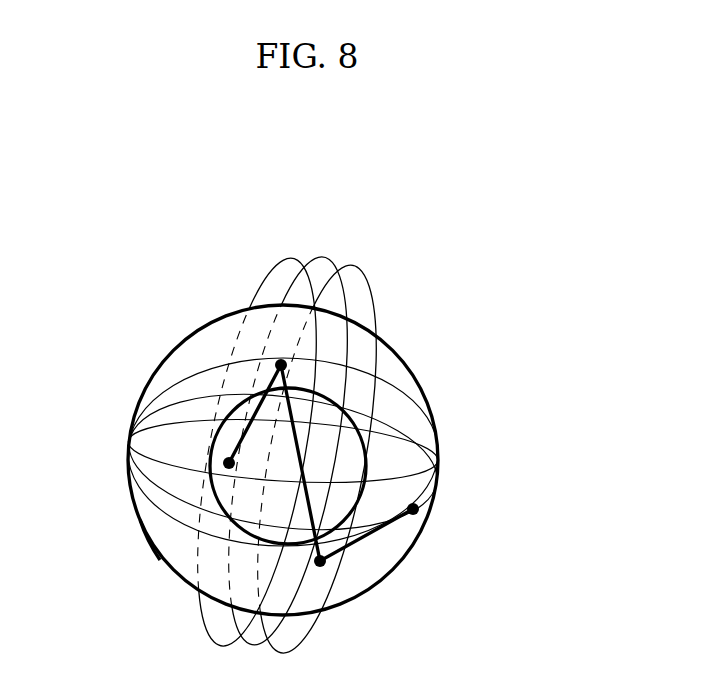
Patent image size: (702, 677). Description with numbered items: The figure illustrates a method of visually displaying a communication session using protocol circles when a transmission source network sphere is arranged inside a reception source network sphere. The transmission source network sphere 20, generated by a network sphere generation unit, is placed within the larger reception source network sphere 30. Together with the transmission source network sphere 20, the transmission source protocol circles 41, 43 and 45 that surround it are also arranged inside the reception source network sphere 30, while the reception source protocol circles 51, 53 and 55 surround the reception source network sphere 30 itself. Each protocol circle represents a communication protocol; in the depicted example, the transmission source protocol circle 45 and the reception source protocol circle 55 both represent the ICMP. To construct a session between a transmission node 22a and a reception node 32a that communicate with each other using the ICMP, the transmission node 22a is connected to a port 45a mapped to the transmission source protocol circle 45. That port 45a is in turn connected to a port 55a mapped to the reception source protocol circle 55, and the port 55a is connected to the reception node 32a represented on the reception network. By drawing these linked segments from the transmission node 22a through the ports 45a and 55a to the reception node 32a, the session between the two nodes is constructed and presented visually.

The transmission source network sphere 20 is at (438, 440).
The transmission node 22a is at (140, 528).
The reception source network sphere 30 is at (427, 393).
The reception node 32a is at (415, 514).
The transmission source protocol circle 41 is at (225, 372).
The transmission source protocol circle 43 is at (238, 365).
The transmission source protocol circle 45 is at (337, 367).
The port 45a is at (268, 355).
The reception source protocol circle 51 is at (275, 300).
The reception source protocol circle 53 is at (330, 258).
The reception source protocol circle 55 is at (372, 283).
The port 55a is at (322, 566).